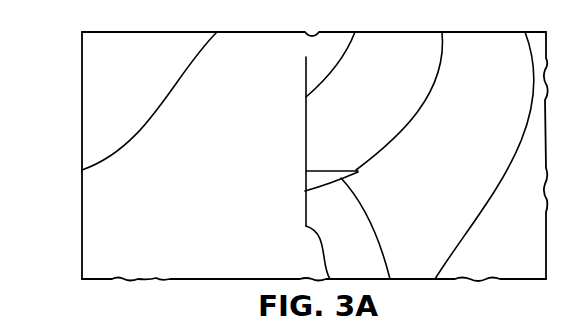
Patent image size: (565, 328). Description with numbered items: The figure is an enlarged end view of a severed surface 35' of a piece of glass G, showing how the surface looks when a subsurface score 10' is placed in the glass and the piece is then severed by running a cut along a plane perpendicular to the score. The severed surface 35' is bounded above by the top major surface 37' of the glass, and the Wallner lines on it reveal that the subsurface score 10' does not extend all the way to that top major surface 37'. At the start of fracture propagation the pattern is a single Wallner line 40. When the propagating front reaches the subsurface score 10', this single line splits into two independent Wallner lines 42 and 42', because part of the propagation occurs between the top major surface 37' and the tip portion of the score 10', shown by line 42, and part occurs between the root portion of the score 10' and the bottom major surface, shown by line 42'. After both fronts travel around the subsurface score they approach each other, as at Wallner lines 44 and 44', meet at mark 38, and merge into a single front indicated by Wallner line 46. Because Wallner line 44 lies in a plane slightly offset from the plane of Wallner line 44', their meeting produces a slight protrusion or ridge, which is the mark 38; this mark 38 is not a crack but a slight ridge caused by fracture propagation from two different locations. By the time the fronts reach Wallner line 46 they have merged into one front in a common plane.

The top major surface 37' is at (314, 21).
The severed surface 35' is at (67, 155).
The piece of glass G is at (116, 271).
The Wallner line 40 is at (129, 141).
The subsurface score 10' is at (284, 141).
The Wallner line 42 is at (343, 64).
The mark 38 is at (330, 170).
The Wallner line 44 is at (399, 101).
The Wallner line 46 is at (498, 182).
The Wallner line 44' is at (378, 228).
The Wallner line 42' is at (299, 252).